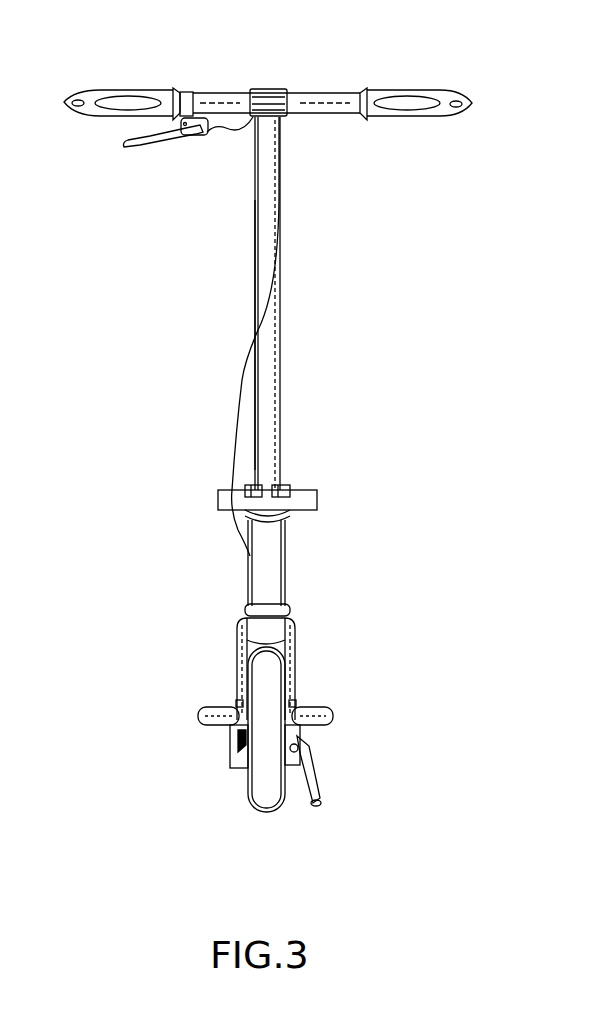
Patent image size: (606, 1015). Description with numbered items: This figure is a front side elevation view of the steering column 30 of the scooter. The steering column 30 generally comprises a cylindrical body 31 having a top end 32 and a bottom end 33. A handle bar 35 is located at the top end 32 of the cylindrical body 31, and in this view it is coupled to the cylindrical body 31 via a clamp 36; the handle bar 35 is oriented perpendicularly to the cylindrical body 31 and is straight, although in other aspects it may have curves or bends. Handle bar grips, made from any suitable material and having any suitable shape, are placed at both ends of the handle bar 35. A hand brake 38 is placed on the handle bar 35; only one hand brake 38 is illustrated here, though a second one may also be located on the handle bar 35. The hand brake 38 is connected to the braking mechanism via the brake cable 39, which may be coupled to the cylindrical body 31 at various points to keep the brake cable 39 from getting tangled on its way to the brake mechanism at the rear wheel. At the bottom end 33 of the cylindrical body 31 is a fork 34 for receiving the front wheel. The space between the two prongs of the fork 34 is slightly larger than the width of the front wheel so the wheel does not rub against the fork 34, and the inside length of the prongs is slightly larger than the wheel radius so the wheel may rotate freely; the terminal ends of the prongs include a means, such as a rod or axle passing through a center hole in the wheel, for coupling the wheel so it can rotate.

The steering column 30 is at (323, 381).
The cylindrical body 31 is at (274, 332).
The top end 32 is at (291, 118).
The bottom end 33 is at (300, 618).
The fork 34 is at (293, 673).
The handle bar 35 is at (331, 93).
The clamp 36 is at (266, 89).
The hand brake 38 is at (172, 150).
The brake cable 39 is at (238, 404).